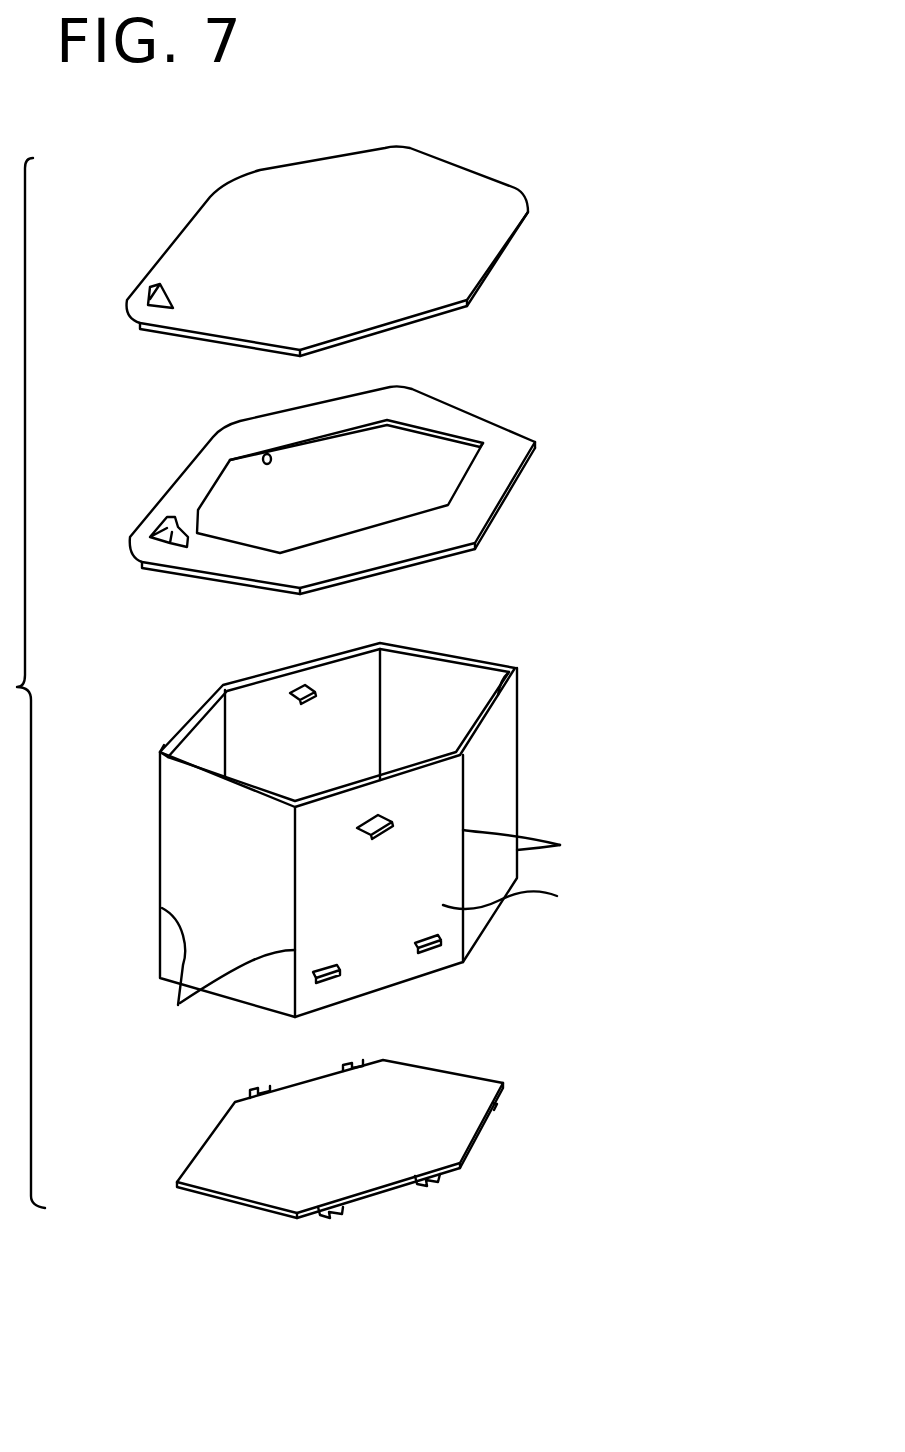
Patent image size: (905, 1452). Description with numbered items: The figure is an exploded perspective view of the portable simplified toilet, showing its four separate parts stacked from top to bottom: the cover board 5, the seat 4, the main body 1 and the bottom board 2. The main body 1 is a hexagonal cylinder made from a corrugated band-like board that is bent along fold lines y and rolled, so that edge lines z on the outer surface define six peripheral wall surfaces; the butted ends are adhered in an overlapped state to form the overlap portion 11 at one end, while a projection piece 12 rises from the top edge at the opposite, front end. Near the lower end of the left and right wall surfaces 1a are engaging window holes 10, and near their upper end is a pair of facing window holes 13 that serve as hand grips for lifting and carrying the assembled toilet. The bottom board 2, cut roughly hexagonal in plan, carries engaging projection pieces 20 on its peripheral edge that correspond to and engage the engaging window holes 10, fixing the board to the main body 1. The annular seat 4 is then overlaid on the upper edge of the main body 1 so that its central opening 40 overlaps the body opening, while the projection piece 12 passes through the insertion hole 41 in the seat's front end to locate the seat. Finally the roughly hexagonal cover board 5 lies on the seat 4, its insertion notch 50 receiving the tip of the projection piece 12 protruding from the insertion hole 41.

The main body 1 is at (520, 765).
The left and right wall surfaces 1a is at (333, 670).
The bottom board 2 is at (432, 1068).
The seat 4 is at (538, 452).
The cover board 5 is at (528, 195).
The engaging window hole 10 is at (335, 982).
The overlap portion 11 is at (490, 690).
The projection piece 12 is at (163, 763).
The window hole 13 is at (310, 693).
The engaging projection piece 20 is at (255, 1093).
The central opening 40 is at (267, 455).
The insertion hole 41 is at (160, 530).
The insertion notch 50 is at (150, 300).
The fold line y is at (225, 712).
The edge line z is at (374, 936).